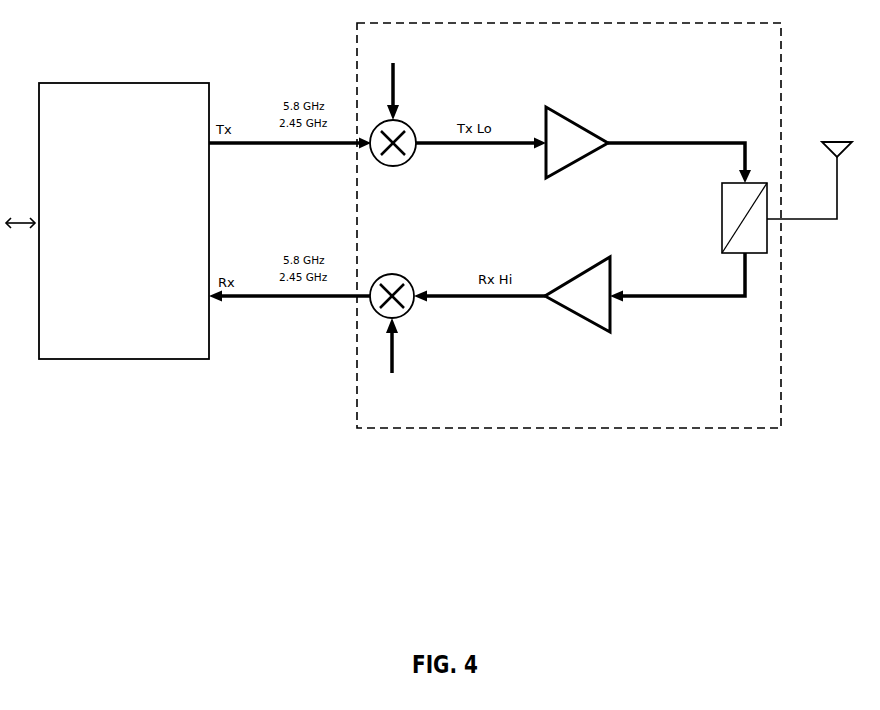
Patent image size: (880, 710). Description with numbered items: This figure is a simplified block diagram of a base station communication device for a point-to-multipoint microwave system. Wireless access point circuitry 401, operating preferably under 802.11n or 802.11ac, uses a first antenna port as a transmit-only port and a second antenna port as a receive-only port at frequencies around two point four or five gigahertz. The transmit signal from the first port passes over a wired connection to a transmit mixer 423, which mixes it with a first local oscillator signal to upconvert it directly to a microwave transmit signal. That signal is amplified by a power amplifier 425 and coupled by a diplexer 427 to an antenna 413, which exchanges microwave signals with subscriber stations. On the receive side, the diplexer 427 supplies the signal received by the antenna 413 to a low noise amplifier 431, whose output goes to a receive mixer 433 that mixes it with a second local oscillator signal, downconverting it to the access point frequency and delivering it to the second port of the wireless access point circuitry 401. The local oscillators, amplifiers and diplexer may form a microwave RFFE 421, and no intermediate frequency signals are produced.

The wireless access point circuitry 401 is at (209, 203).
The antenna 413 is at (830, 153).
The microwave RFFE 421 is at (570, 430).
The transmit mixer 423 is at (403, 163).
The power amplifier 425 is at (585, 157).
The diplexer 427 is at (768, 245).
The low noise amplifier 431 is at (610, 320).
The receive mixer 433 is at (412, 312).